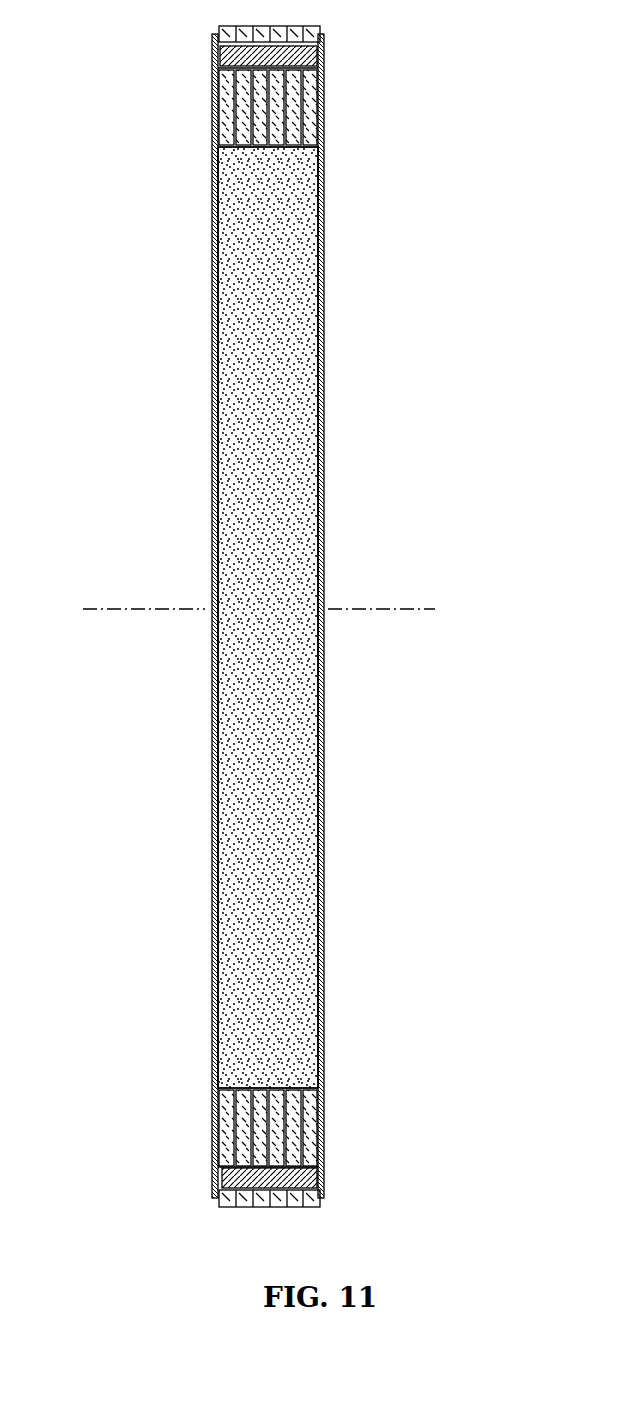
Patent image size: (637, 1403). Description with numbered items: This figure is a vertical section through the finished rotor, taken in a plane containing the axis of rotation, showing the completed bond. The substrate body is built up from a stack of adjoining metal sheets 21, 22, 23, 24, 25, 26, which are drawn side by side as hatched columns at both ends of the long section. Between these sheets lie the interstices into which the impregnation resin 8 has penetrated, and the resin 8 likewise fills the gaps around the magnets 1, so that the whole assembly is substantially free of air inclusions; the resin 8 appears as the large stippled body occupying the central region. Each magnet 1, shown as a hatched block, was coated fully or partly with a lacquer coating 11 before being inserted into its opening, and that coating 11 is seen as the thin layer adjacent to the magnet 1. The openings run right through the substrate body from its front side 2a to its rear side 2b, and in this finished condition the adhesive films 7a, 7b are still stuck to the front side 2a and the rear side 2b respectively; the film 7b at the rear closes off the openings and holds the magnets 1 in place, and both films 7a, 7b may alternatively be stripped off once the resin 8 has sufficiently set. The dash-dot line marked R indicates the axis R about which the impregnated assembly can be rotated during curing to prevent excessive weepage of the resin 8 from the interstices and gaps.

The magnet 1 is at (317, 56).
The lacquer coating 11 is at (318, 38).
The metal sheet 21 is at (222, 78).
The metal sheet 22 is at (244, 107).
The metal sheet 23 is at (263, 136).
The metal sheet 24 is at (270, 88).
The metal sheet 25 is at (293, 116).
The metal sheet 26 is at (310, 137).
The impregnation resin 8 is at (288, 407).
The front side 2a is at (205, 779).
The rear side 2b is at (329, 781).
The adhesive film 7a is at (212, 832).
The adhesive film 7b is at (322, 830).
The axis R is at (259, 592).